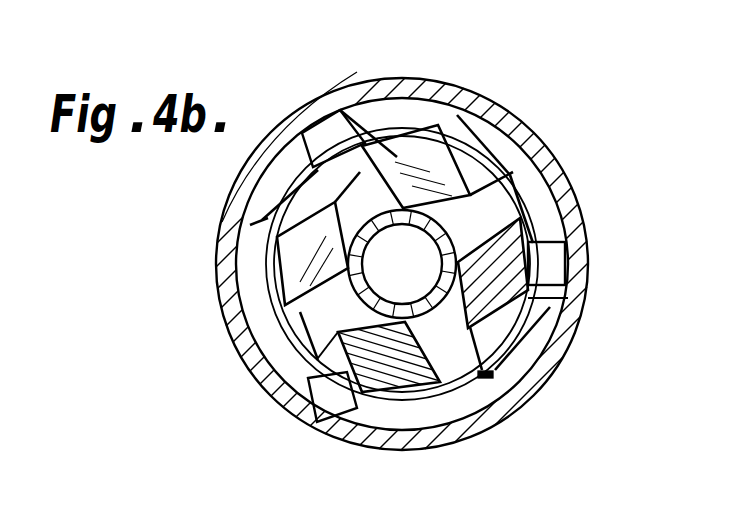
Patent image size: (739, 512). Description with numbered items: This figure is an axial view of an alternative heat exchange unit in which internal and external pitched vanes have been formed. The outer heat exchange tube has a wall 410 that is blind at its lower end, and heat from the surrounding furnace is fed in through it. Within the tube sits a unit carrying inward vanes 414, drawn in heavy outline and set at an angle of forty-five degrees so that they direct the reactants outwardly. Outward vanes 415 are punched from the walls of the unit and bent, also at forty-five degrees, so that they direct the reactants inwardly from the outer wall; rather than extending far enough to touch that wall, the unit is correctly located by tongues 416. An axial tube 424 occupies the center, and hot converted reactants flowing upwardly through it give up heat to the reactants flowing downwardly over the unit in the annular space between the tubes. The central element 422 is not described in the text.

The wall 410 is at (545, 136).
The inward vanes 414 is at (398, 318).
The outward vanes 415 is at (268, 218).
The tongues 416 is at (328, 133).
The central hub 422 is at (385, 276).
The axial tube 424 is at (340, 330).